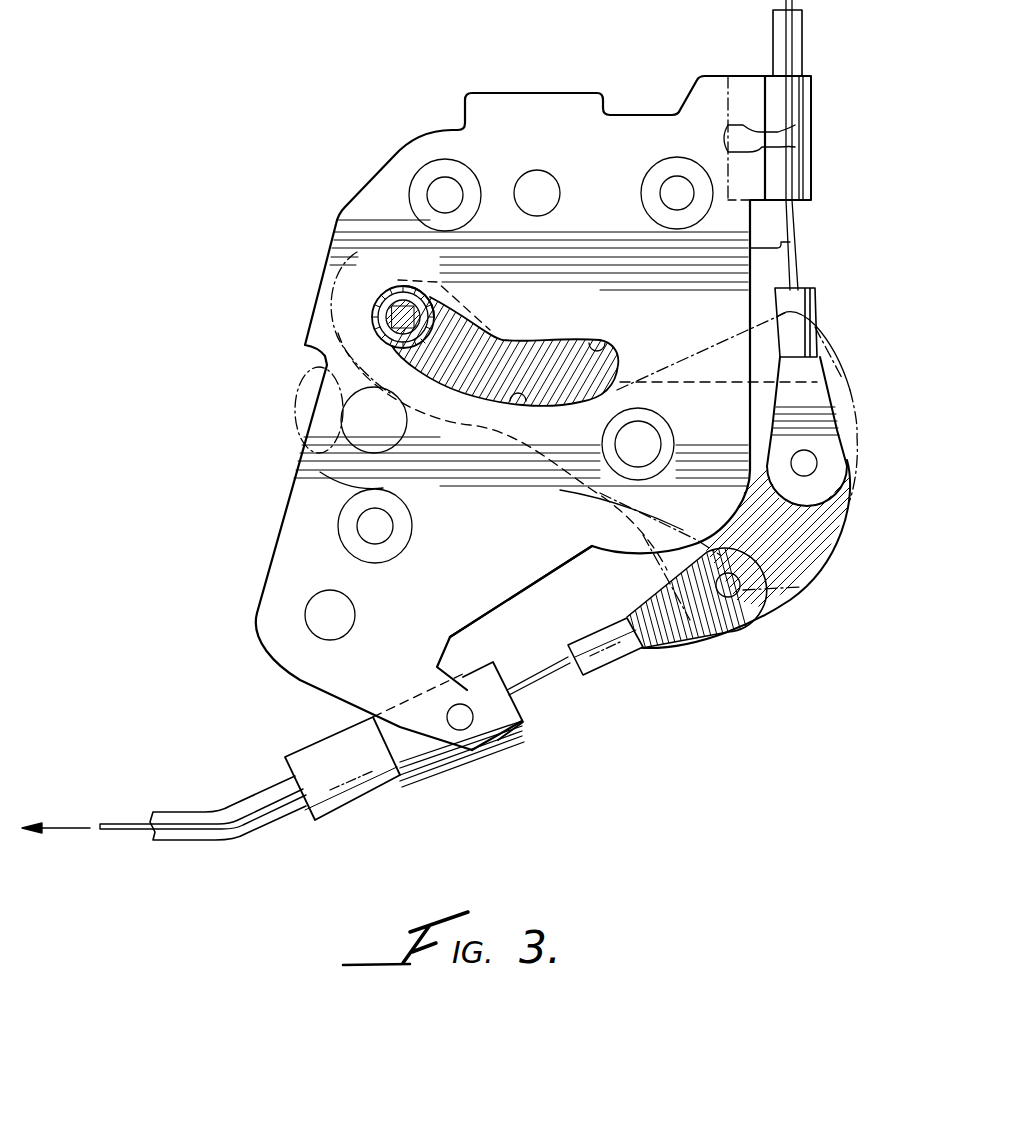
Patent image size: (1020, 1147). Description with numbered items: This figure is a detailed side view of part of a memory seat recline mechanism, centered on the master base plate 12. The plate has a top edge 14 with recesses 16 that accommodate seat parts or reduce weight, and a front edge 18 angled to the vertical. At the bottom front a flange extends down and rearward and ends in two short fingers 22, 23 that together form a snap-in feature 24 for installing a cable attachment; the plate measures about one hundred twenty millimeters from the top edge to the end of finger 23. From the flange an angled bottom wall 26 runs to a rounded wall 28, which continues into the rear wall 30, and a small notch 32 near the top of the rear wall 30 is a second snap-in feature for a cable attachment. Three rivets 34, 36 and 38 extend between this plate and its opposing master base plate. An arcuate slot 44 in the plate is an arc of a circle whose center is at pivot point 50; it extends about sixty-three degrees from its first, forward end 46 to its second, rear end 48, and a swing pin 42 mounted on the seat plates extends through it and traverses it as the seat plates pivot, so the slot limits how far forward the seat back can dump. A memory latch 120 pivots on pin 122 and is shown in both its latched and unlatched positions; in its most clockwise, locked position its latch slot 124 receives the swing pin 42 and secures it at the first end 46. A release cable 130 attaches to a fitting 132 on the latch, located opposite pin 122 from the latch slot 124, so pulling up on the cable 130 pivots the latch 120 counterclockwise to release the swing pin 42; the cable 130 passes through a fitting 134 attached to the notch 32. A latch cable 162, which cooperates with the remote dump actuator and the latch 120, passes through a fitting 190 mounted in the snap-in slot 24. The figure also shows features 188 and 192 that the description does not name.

The master base plate 12 is at (727, 293).
The top edge 14 is at (528, 93).
The recesses 16 is at (644, 112).
The front edge 18 is at (330, 243).
The short finger 22 is at (467, 690).
The short finger 23 is at (468, 745).
The snap-in feature 24 is at (497, 737).
The angled bottom wall 26 is at (500, 608).
The rounded wall 28 is at (800, 530).
The rear wall 30 is at (780, 240).
The notch 32 is at (790, 127).
The rivet 34 is at (437, 183).
The rivet 36 is at (677, 175).
The rivet 38 is at (373, 525).
The swing pin 42 is at (390, 313).
The arcuate slot 44 is at (500, 340).
The first end of arcuate slot 46 is at (522, 407).
The second end of arcuate slot 48 is at (603, 343).
The pivot point 50 is at (543, 177).
The memory latch 120 is at (840, 397).
The pin 122 is at (640, 444).
The latch slot 124 is at (428, 297).
The cable 130 is at (800, 33).
The fitting 132 is at (806, 463).
The fitting 134 is at (803, 98).
The latch cable 162 is at (113, 823).
The link 188 is at (553, 673).
The fitting 190 is at (357, 793).
The pivot pin 192 is at (735, 590).